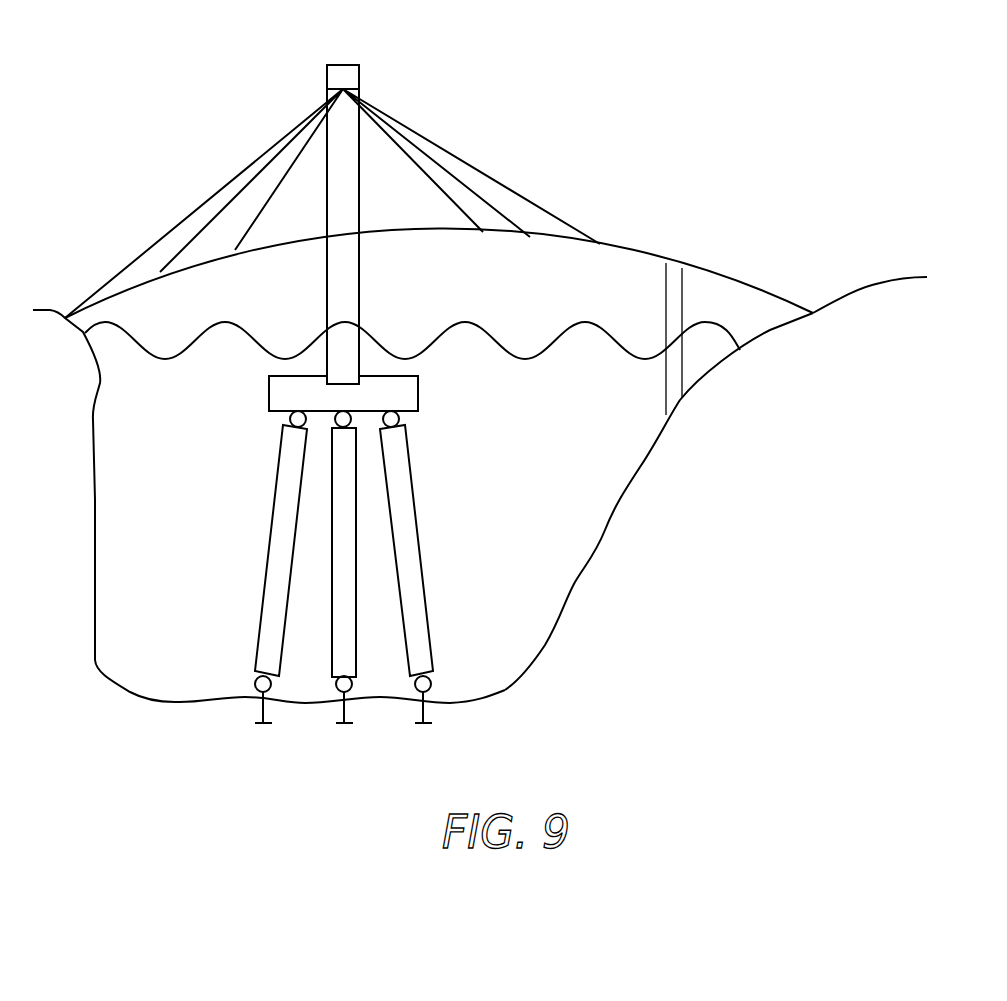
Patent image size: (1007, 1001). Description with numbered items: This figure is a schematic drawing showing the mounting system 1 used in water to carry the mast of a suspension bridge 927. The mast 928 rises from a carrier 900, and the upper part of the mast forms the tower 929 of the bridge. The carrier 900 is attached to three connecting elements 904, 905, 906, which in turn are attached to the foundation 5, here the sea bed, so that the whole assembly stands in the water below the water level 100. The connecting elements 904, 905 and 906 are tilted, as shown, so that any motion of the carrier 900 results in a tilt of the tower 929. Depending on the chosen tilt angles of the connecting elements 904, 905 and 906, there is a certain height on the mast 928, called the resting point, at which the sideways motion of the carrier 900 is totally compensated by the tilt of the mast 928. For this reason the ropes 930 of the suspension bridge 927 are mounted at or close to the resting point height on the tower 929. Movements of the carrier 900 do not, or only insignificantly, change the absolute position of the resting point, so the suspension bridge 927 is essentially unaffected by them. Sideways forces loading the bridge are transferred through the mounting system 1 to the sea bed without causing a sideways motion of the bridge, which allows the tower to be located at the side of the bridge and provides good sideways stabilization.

The mounting system 1 is at (437, 397).
The foundation 5 is at (520, 677).
The water level 100 is at (227, 320).
The carrier 900 is at (277, 387).
The connecting element 904 is at (270, 557).
The connecting element 905 is at (347, 497).
The connecting element 906 is at (413, 537).
The suspension bridge 927 is at (193, 260).
The mast 928 is at (352, 310).
The tower 929 is at (345, 72).
The ropes 930 is at (475, 188).